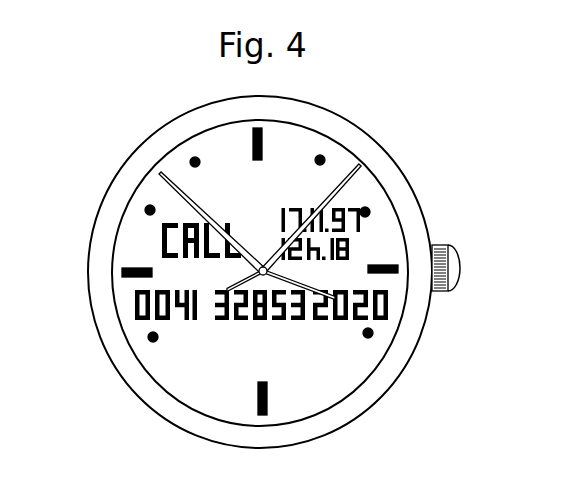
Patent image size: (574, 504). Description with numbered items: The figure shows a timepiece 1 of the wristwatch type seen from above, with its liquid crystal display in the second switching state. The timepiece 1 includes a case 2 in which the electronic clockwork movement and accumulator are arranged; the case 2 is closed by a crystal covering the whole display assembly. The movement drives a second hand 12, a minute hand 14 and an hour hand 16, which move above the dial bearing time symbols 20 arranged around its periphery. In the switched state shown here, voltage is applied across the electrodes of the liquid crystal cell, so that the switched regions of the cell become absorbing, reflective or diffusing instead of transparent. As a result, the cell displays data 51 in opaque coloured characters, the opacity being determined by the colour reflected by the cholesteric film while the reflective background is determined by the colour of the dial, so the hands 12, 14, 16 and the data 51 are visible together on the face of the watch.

The timepiece 1 is at (422, 133).
The case 2 is at (387, 393).
The second hand 12 is at (343, 178).
The minute hand 14 is at (170, 176).
The hour hand 16 is at (382, 320).
The time symbols 20 is at (257, 126).
The data 51 is at (120, 210).